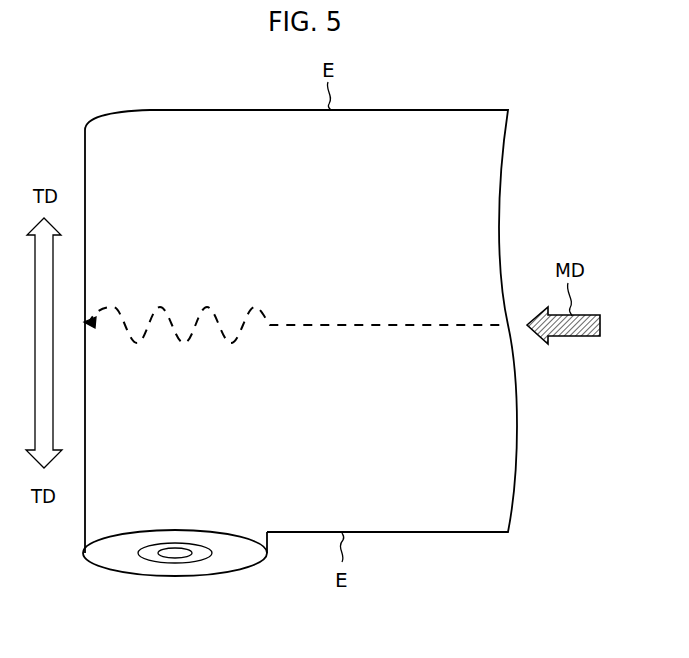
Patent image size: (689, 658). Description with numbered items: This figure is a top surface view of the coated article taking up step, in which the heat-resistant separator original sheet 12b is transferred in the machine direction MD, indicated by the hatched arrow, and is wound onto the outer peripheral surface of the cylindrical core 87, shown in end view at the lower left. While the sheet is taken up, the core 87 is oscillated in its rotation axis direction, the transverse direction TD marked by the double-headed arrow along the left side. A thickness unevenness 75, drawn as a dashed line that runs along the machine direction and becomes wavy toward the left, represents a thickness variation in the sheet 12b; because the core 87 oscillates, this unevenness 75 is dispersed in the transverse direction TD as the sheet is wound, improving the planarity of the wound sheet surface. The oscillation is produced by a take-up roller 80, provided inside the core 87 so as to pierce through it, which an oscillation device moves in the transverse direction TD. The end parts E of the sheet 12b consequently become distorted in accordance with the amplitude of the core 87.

The heat-resistant separator original sheet 12b is at (421, 120).
The thickness unevenness 75 is at (458, 330).
The take-up roller 80 is at (175, 557).
The core 87 is at (204, 557).